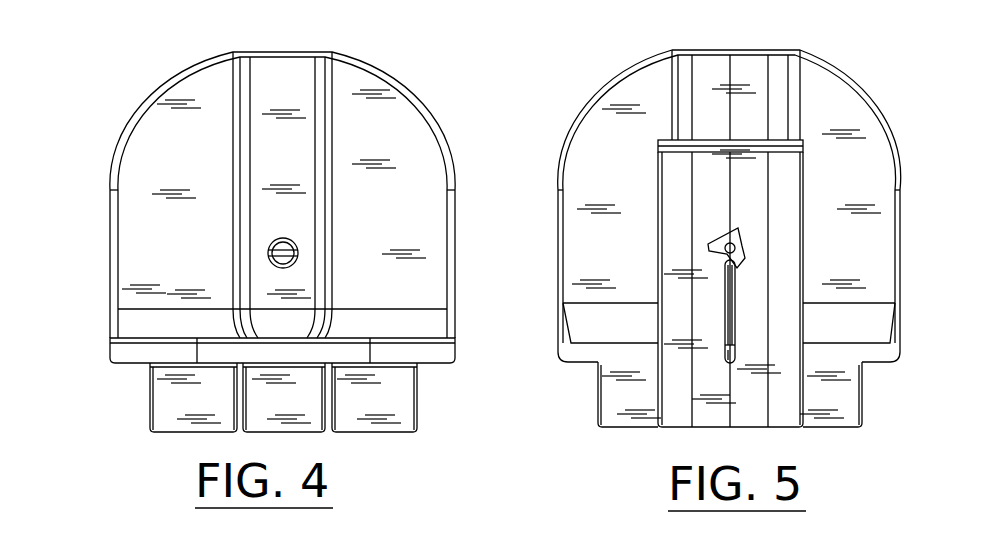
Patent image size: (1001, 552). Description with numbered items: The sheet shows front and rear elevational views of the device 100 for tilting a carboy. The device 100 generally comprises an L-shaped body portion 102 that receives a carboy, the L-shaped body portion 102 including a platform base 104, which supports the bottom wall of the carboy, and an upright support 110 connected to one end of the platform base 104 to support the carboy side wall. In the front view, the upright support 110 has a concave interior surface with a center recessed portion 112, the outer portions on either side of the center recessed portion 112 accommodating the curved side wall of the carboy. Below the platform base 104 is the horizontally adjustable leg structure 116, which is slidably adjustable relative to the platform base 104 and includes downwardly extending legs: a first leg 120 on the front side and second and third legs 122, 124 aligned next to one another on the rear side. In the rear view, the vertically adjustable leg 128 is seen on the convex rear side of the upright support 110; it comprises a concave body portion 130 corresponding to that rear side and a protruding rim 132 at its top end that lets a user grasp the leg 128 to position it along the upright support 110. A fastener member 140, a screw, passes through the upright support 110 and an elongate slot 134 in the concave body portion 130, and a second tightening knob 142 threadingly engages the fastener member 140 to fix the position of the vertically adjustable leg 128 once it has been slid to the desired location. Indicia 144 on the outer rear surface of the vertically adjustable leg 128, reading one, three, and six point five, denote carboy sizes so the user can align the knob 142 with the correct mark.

In FIG. 4, the device for tilting a carboy 100 is at (281, 276).
In FIG. 5, the device for tilting a carboy 100 is at (731, 276).
In FIG. 4, the L-shaped body portion 102 is at (277, 174).
In FIG. 5, the L-shaped body portion 102 is at (731, 213).
In FIG. 4, the platform base 104 is at (390, 353).
In FIG. 4, the upright support 110 is at (170, 147).
In FIG. 5, the upright support 110 is at (852, 185).
In FIG. 4, the center recessed portion 112 is at (285, 150).
In FIG. 4, the horizontally adjustable leg structure 116 is at (285, 409).
In FIG. 5, the horizontally adjustable leg structure 116 is at (730, 431).
In FIG. 4, the first leg 120 is at (283, 410).
In FIG. 4, the second leg 122 is at (172, 402).
In FIG. 5, the second leg 122 is at (862, 430).
In FIG. 4, the third leg 124 is at (420, 402).
In FIG. 5, the third leg 124 is at (625, 392).
In FIG. 5, the vertically adjustable leg 128 is at (806, 375).
In FIG. 5, the concave body portion 130 is at (731, 253).
In FIG. 5, the protruding rim 132 is at (762, 143).
In FIG. 5, the elongate slot 134 is at (728, 295).
In FIG. 4, the fastener member 140 is at (285, 238).
In FIG. 5, the second tightening knob 142 is at (742, 232).
In FIG. 5, the indicia 144 is at (777, 349).